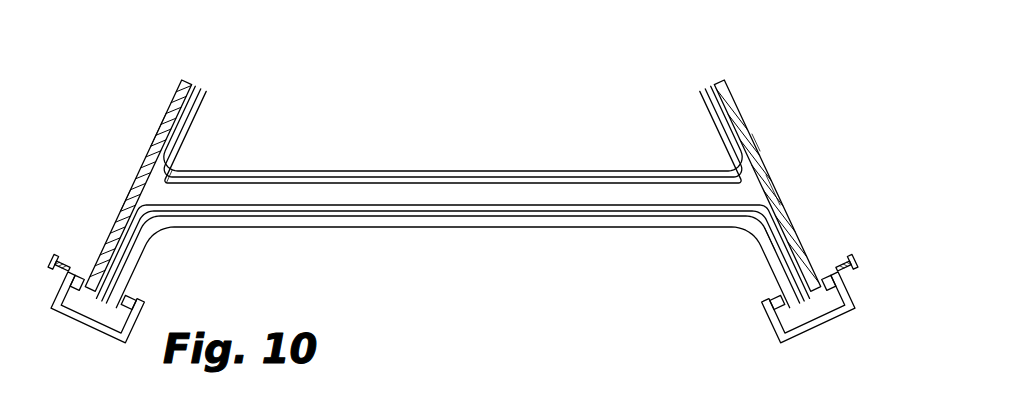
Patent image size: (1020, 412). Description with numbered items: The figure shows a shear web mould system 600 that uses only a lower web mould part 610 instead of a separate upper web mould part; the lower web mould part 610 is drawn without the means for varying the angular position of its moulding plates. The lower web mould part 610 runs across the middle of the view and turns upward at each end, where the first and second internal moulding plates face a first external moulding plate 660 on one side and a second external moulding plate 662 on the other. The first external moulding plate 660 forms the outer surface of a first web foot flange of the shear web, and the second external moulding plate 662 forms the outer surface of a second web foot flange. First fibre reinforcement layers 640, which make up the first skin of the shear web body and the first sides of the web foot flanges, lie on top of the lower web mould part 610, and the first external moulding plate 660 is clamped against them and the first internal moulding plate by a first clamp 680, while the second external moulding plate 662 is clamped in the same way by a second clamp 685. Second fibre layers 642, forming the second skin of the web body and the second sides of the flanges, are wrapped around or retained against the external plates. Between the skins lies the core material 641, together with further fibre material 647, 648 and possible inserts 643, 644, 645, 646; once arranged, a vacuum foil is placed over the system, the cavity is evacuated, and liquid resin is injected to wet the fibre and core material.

The shear web mould system 600 is at (596, 129).
The lower web mould part 610 is at (421, 228).
The first fibre reinforcement layers 640 is at (617, 205).
The core material 641 is at (278, 195).
The second fibre layers 642 is at (408, 183).
The insert 643 is at (120, 209).
The insert 644 is at (162, 174).
The insert 645 is at (779, 218).
The insert 646 is at (752, 146).
The fibre material 647 is at (158, 138).
The fibre material 648 is at (776, 197).
The first external moulding plate 660 is at (177, 102).
The second external moulding plate 662 is at (731, 104).
The first clamp 680 is at (142, 303).
The second clamp 685 is at (763, 302).